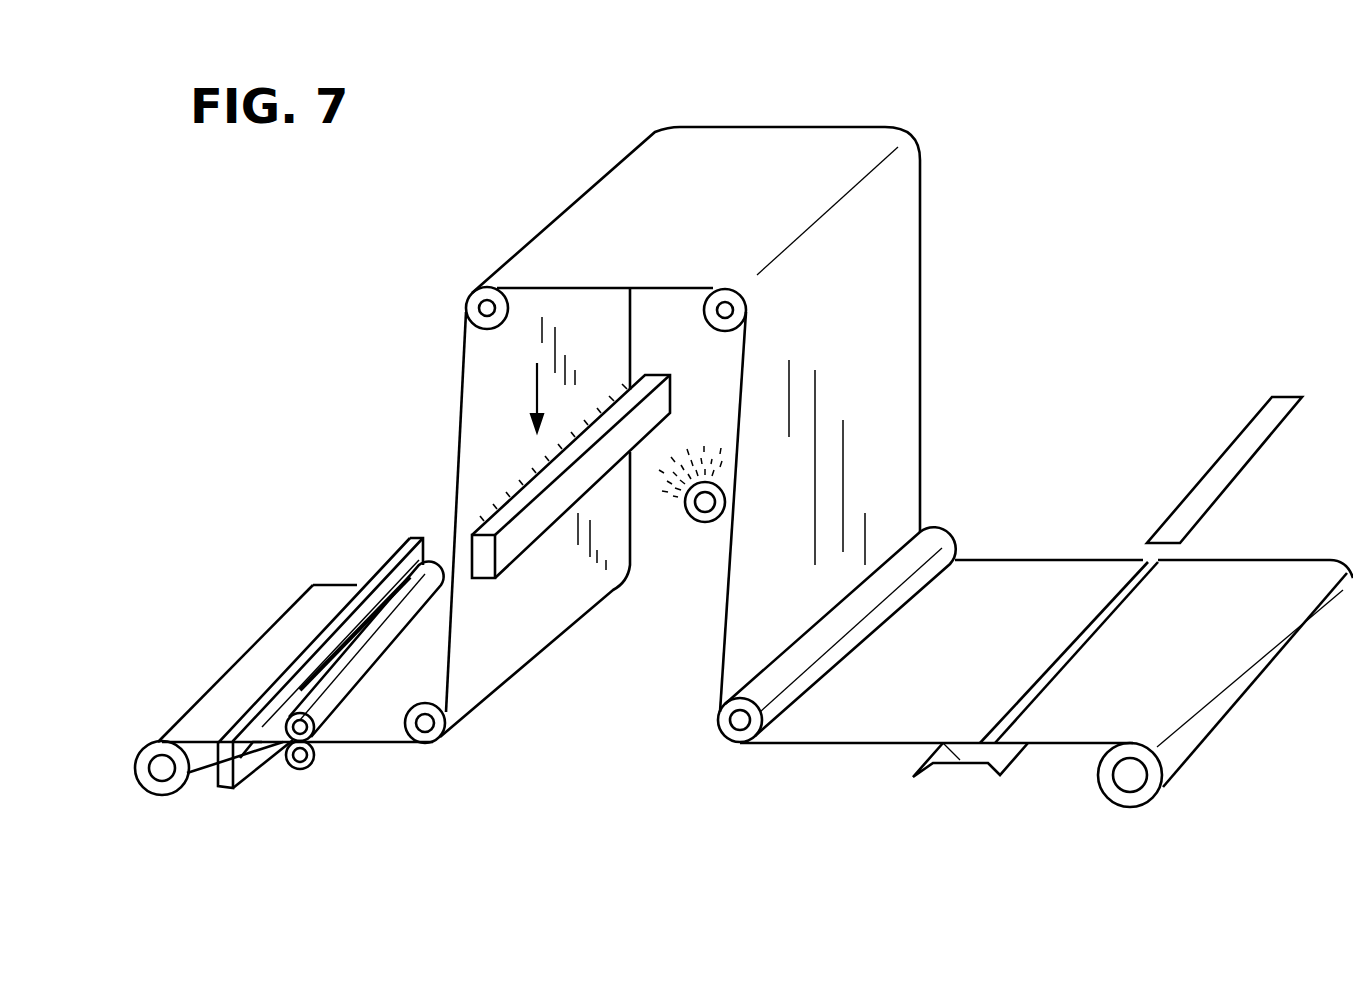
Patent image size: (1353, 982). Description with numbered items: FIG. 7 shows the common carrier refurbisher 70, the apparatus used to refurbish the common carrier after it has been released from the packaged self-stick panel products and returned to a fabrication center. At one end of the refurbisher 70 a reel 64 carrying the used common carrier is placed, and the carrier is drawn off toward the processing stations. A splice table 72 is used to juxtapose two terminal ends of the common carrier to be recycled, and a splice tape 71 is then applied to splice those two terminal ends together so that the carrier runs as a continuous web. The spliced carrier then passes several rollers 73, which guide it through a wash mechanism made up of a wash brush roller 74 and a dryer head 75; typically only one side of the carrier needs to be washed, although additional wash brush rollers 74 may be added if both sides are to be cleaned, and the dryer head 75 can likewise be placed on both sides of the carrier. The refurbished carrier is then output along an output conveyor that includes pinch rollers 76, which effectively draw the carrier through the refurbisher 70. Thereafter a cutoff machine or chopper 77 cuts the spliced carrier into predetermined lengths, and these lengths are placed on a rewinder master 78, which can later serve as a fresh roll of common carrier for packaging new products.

The reel 64 is at (1135, 785).
The common carrier refurbisher 70 is at (328, 365).
The splice tape 71 is at (1257, 435).
The splice table 72 is at (960, 763).
The rollers 73 is at (482, 306).
The wash brush roller 74 is at (705, 510).
The dryer head 75 is at (510, 545).
The pinch rollers 76 is at (300, 765).
The cutoff machine or chopper 77 is at (413, 538).
The rewinder master 78 is at (160, 777).